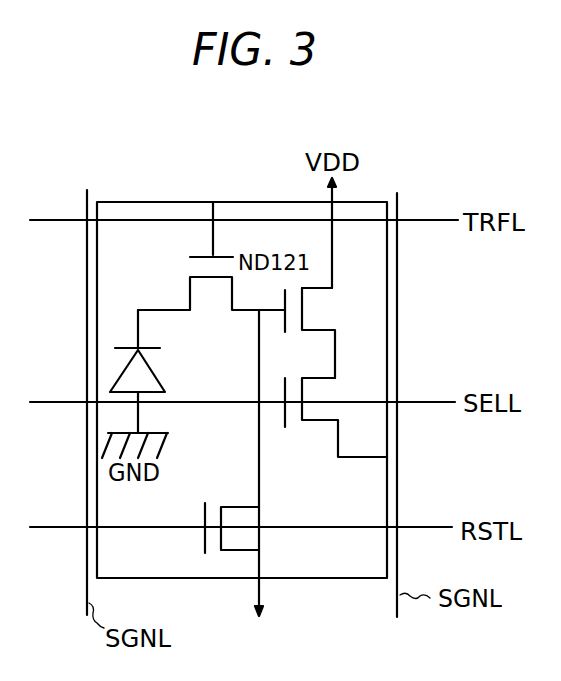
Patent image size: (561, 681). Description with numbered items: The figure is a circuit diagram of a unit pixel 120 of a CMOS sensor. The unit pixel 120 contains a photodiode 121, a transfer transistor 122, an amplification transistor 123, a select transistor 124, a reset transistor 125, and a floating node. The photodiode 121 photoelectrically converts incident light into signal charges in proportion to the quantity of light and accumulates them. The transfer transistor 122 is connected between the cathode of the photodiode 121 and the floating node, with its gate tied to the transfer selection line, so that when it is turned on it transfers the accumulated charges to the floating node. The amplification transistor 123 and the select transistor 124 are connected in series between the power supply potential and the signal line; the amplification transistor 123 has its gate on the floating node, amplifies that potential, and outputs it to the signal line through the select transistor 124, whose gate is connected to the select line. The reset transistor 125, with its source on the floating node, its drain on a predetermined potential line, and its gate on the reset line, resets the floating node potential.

The unit pixel 120 is at (327, 584).
The photodiode 121 is at (166, 381).
The transfer transistor 122 is at (212, 290).
The amplification transistor 123 is at (330, 311).
The select transistor 124 is at (355, 390).
The reset transistor 125 is at (258, 519).